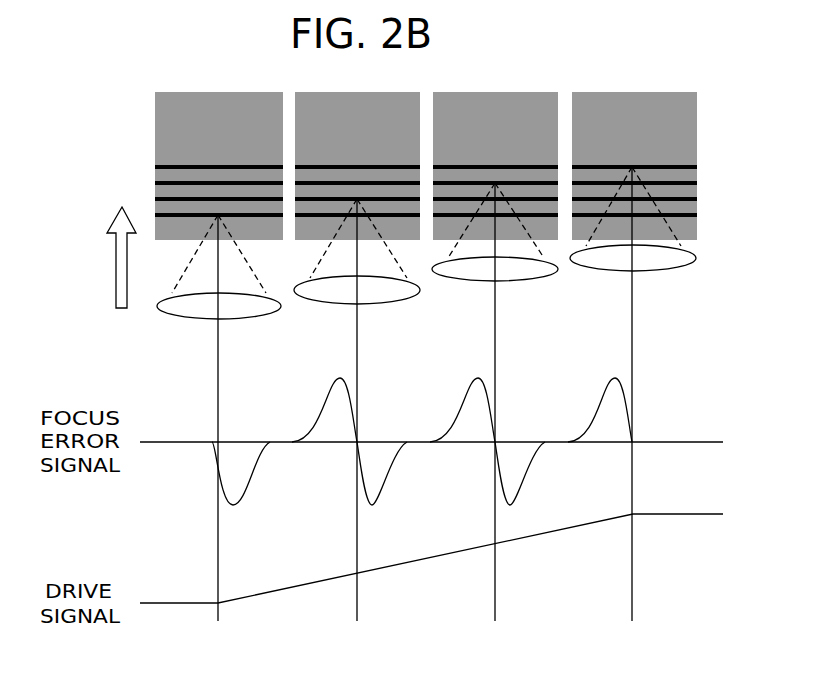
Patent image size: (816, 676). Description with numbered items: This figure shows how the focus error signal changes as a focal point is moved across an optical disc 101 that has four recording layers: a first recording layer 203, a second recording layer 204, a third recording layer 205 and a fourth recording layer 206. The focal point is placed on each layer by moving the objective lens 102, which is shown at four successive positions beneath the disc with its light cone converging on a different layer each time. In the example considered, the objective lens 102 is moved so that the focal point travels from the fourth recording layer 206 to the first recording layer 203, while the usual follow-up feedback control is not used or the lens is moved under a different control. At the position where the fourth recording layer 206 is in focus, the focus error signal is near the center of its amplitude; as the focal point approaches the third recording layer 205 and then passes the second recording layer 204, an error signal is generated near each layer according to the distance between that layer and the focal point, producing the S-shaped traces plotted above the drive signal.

The optical disc 101 is at (461, 159).
The objective lens 102 is at (180, 316).
The first recording layer 203 is at (697, 167).
The second recording layer 204 is at (697, 183).
The third recording layer 205 is at (697, 199).
The fourth recording layer 206 is at (697, 215).